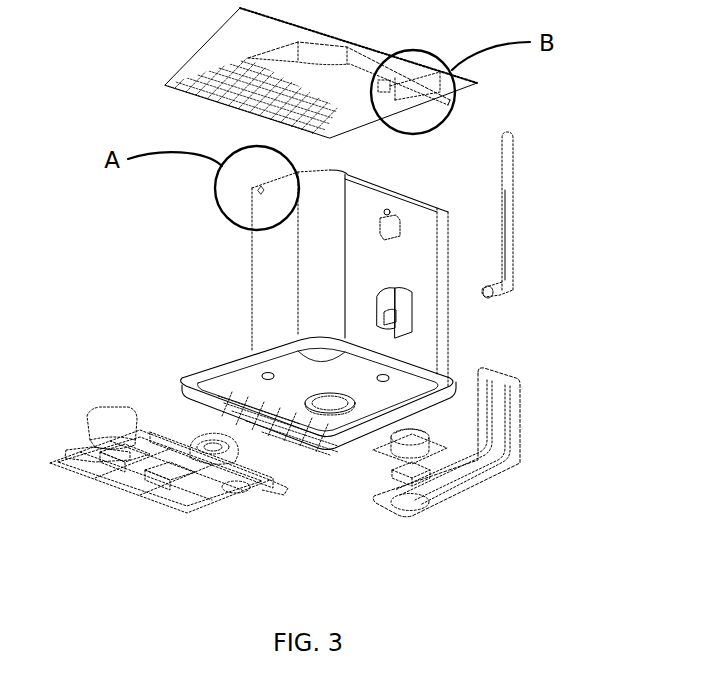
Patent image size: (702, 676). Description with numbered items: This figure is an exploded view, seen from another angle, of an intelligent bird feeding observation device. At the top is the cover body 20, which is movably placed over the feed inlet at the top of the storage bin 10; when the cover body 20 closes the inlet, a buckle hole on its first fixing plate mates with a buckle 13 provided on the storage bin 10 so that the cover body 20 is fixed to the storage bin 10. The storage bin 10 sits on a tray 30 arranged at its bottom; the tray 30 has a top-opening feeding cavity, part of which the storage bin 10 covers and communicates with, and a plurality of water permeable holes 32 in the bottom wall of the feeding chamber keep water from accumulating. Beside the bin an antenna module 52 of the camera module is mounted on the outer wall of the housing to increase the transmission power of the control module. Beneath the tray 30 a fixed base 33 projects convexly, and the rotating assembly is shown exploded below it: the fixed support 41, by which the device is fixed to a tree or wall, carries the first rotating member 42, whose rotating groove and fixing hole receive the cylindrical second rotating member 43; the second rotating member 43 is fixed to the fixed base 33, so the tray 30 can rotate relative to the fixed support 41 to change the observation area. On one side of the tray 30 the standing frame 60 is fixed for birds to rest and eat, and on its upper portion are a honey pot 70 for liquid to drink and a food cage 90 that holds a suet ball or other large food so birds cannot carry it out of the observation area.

The storage bin 10 is at (270, 272).
The buckle 13 is at (393, 211).
The cover body 20 is at (230, 43).
The tray 30 is at (222, 368).
The water permeable holes 32 is at (240, 409).
The fixed base 33 is at (331, 404).
The fixed support 41 is at (498, 405).
The first rotating member 42 is at (438, 447).
The second rotating member 43 is at (430, 472).
The antenna module 52 is at (508, 263).
The standing frame 60 is at (122, 490).
The honey pot 70 is at (103, 432).
The food cage 90 is at (231, 452).